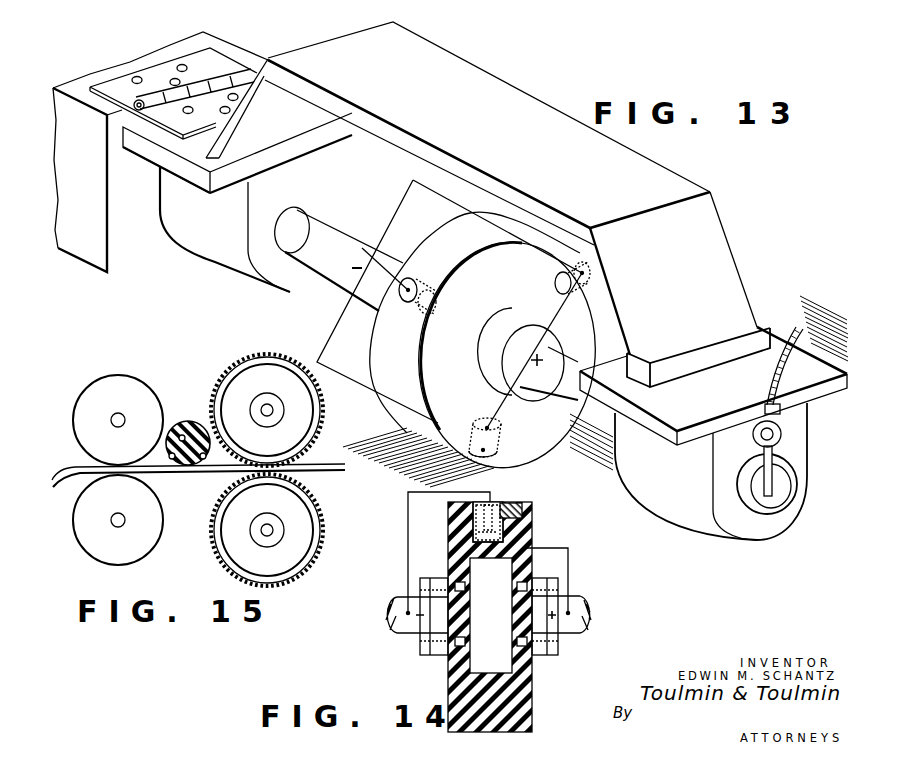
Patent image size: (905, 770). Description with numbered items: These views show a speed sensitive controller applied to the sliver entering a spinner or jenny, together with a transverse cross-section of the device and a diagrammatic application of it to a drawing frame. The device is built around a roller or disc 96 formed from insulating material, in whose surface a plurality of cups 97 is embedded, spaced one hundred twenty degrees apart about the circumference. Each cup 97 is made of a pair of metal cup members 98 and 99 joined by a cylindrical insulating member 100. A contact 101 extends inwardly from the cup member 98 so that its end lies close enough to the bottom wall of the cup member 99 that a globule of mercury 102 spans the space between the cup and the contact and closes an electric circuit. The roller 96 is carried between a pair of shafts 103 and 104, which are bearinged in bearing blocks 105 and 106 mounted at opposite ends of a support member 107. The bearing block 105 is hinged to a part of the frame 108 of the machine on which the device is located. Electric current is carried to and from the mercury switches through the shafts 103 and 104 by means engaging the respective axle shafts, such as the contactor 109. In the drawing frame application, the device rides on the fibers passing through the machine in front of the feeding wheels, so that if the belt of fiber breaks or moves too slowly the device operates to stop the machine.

In FIG. 13, the roller or disc 96 is at (500, 309).
In FIG. 15, the roller or disc 96 is at (186, 430).
In FIG. 14, the roller or disc 96 is at (548, 548).
In FIG. 13, the cups 97 is at (404, 304).
In FIG. 15, the cups 97 is at (172, 459).
In FIG. 14, the metal cup member 98 is at (490, 500).
In FIG. 14, the metal cup member 99 is at (522, 537).
In FIG. 14, the cylindrical insulating member 100 is at (522, 512).
In FIG. 14, the contact 101 is at (456, 532).
In FIG. 14, the globule of mercury 102 is at (455, 550).
In FIG. 13, the shaft 103 is at (365, 243).
In FIG. 13, the shaft 104 is at (577, 357).
In FIG. 13, the bearing block 105 is at (233, 257).
In FIG. 13, the bearing block 106 is at (700, 510).
In FIG. 13, the support member 107 is at (543, 110).
In FIG. 13, the frame 108 is at (100, 258).
In FIG. 13, the contactor 109 is at (779, 444).